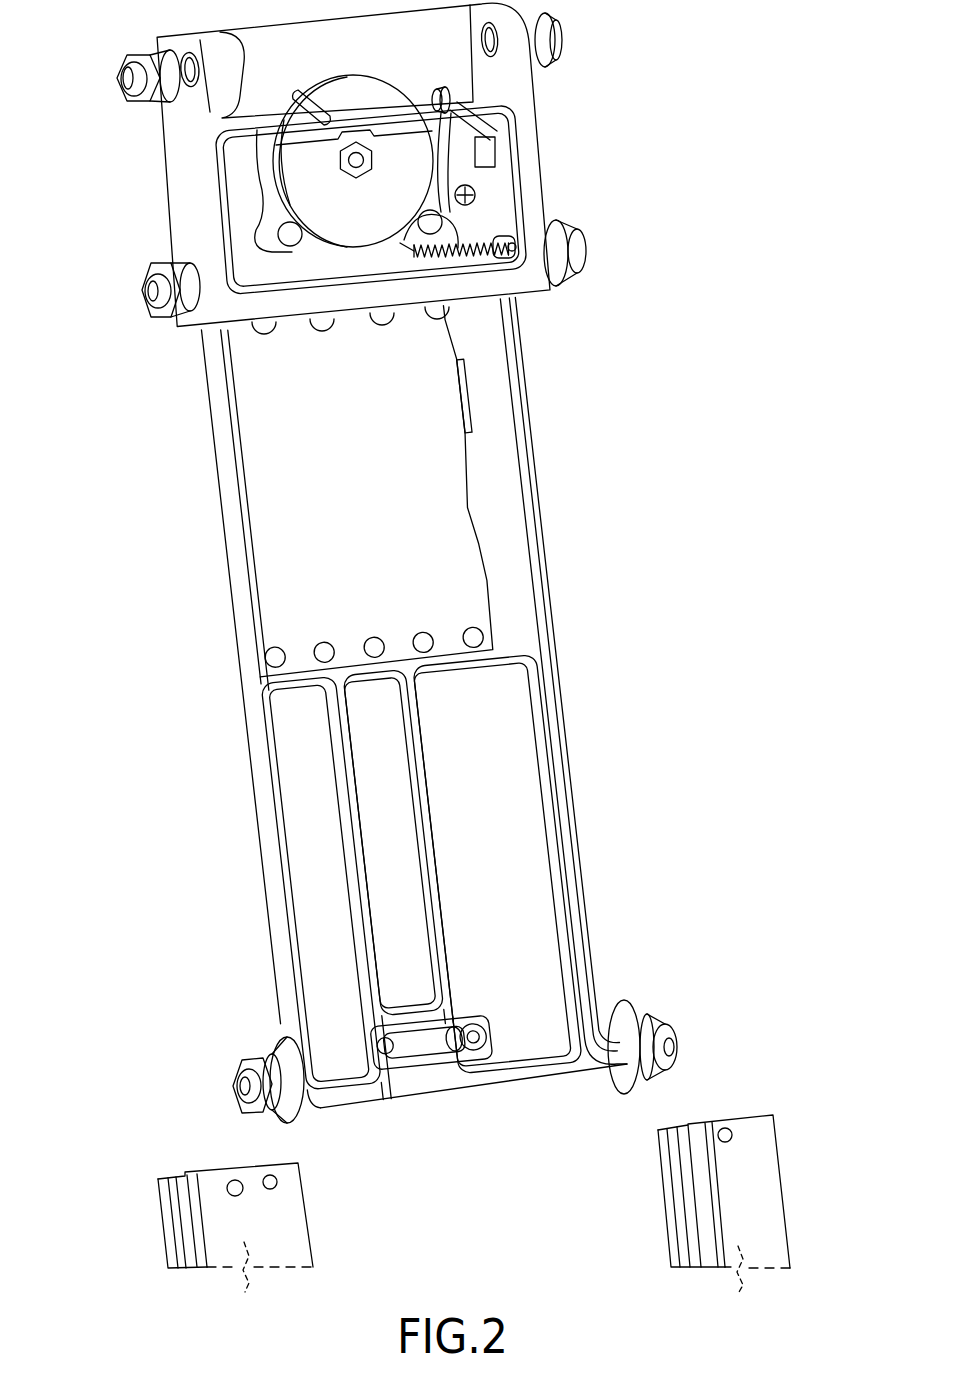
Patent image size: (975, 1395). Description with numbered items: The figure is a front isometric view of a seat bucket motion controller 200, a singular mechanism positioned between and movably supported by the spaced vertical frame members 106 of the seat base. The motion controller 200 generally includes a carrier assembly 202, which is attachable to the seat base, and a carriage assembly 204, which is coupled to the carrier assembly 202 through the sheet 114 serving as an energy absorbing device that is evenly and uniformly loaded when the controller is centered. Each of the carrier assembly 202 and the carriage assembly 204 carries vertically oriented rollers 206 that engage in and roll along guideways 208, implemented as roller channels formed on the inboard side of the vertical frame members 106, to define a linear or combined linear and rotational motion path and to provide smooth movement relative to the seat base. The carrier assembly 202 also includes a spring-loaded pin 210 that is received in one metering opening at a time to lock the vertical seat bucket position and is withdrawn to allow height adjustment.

The seat bucket motion controller 200 is at (130, 382).
The carrier assembly 202 is at (307, 888).
The carriage assembly 204 is at (180, 194).
The rollers 206 is at (125, 66).
The guideways 208 is at (688, 1177).
The spring-loaded pin 210 is at (487, 1038).
The sheet 114 is at (280, 596).
The vertical frame members 106 is at (162, 1218).